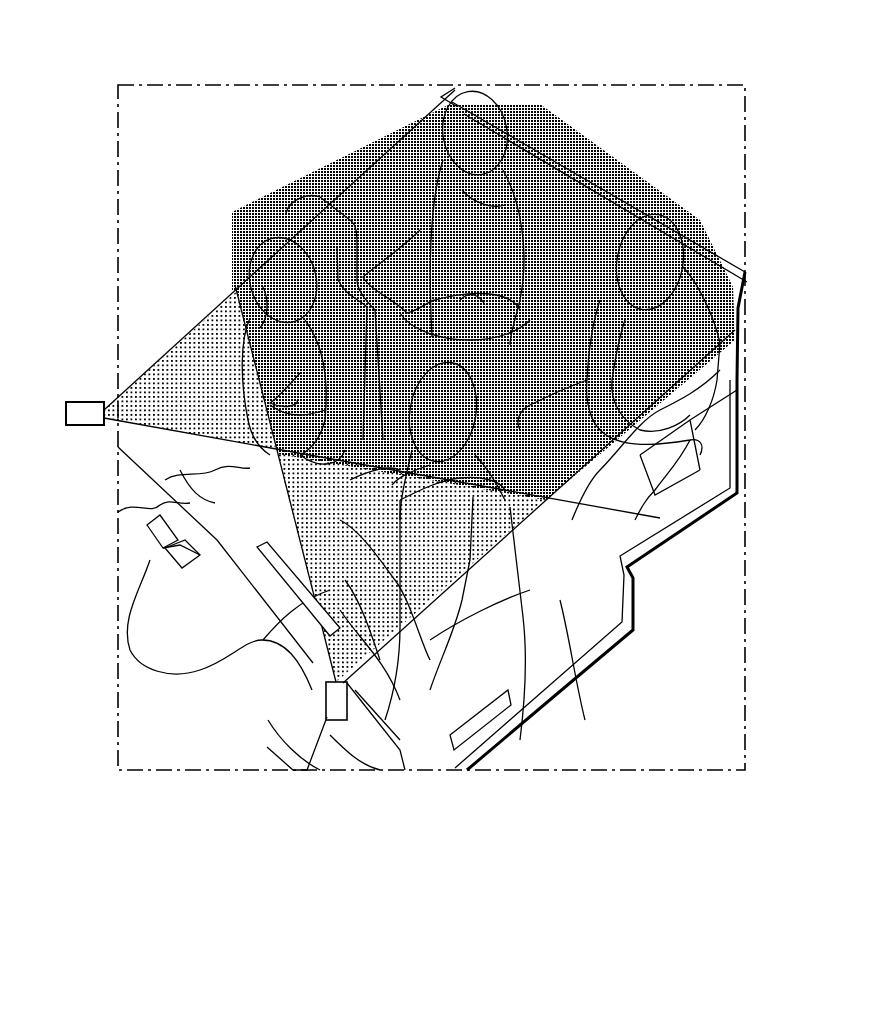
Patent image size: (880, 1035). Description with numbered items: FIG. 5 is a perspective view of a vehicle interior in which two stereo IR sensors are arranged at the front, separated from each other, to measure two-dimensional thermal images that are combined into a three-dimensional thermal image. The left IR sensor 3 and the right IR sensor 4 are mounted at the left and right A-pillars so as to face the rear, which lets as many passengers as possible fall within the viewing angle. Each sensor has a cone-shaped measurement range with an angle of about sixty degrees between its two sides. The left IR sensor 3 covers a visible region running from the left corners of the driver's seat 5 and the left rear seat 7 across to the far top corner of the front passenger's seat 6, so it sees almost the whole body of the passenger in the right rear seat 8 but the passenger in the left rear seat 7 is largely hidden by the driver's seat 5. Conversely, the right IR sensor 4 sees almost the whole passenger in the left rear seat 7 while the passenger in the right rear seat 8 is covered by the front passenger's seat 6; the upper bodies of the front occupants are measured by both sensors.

The left IR sensor 3 is at (334, 703).
The right IR sensor 4 is at (83, 410).
The driver's seat 5 is at (467, 692).
The front passenger's seat 6 is at (235, 548).
The left rear seat 7 is at (683, 497).
The right rear seat 8 is at (516, 132).